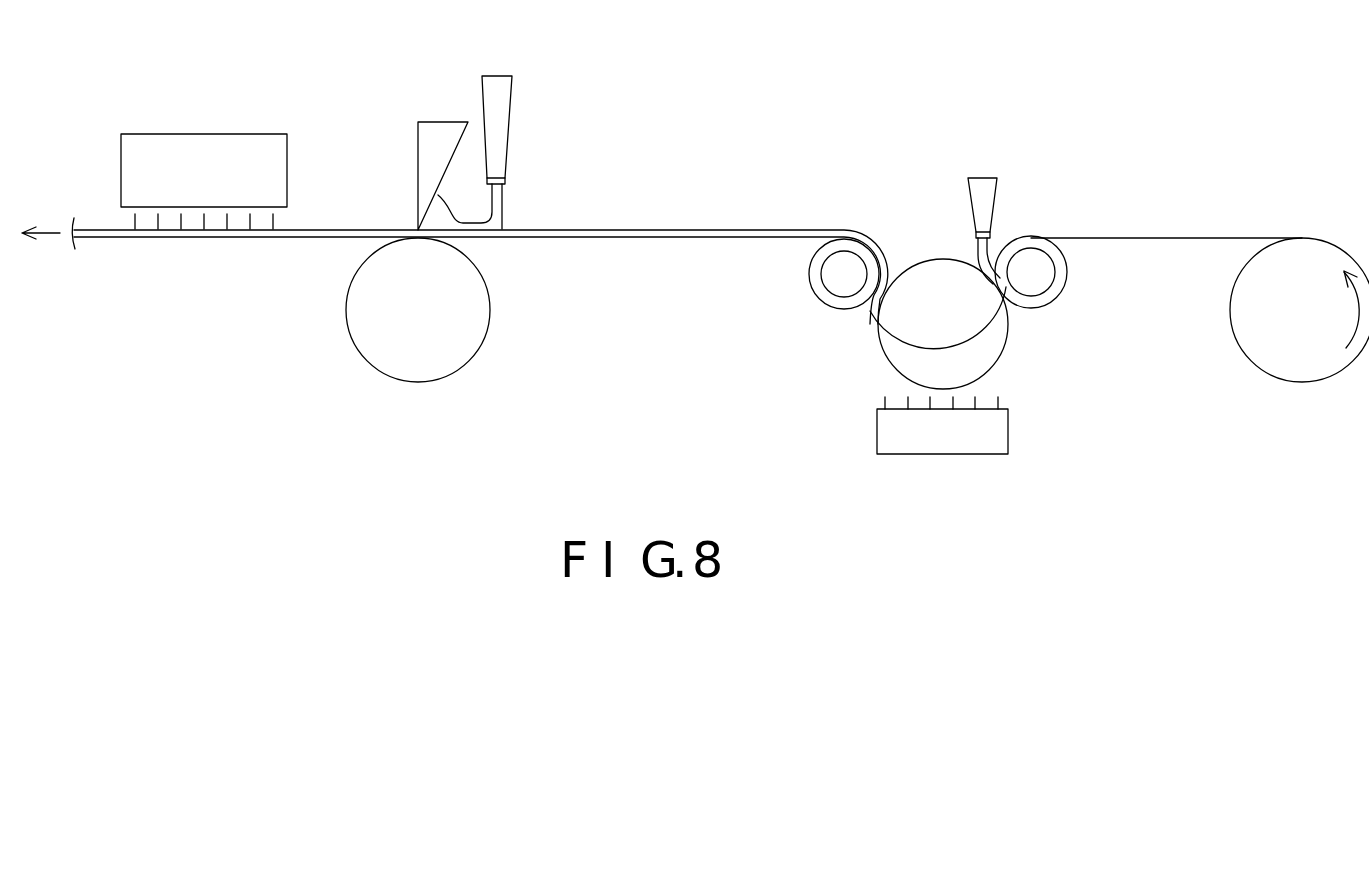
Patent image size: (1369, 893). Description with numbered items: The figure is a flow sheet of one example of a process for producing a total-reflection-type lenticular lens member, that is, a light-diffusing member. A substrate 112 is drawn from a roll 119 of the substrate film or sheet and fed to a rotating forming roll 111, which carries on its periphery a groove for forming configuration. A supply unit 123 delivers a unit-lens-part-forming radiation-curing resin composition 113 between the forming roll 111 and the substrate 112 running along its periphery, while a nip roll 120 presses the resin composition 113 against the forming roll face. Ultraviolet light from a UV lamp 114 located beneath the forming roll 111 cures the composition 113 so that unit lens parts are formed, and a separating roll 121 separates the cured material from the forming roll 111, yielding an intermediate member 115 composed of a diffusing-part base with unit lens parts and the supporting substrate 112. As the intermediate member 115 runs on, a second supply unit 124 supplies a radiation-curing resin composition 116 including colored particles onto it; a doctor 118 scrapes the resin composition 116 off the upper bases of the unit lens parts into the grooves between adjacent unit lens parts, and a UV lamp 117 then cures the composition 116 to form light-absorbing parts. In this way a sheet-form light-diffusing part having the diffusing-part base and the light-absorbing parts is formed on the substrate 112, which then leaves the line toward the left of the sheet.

The forming roll 111 is at (977, 348).
The substrate 112 is at (1138, 236).
The unit-lens-part-forming radiation-curing resin composition 113 is at (977, 256).
The UV lamp 114 is at (943, 445).
The intermediate member 115 is at (694, 230).
The radiation-curing resin composition including colored particles 116 is at (502, 206).
The UV lamp 117 is at (203, 147).
The doctor 118 is at (452, 128).
The roll of the substrate film or sheet 119 is at (1303, 362).
The nip roll 120 is at (1063, 276).
The separating roll 121 is at (420, 360).
The supply unit 123 is at (988, 178).
The supply unit 124 is at (505, 108).